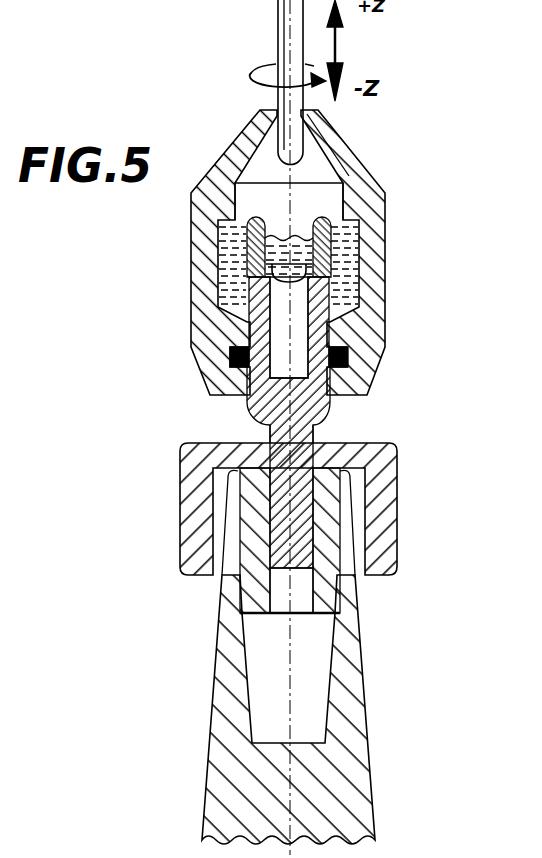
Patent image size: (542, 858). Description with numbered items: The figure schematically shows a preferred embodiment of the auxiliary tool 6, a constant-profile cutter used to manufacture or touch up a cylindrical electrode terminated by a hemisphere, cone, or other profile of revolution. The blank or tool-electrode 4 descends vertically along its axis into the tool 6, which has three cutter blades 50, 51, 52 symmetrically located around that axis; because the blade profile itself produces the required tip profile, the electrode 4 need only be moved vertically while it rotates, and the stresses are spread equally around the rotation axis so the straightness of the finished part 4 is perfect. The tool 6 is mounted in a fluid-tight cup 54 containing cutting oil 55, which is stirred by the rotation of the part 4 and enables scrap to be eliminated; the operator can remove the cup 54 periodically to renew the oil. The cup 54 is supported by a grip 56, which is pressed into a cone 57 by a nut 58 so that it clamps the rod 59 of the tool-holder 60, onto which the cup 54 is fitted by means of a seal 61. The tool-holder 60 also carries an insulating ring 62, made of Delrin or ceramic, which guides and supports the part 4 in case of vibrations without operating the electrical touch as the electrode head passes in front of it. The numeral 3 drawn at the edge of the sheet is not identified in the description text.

The tool changer 3 is at (0, 853).
The tool-electrode 4 is at (286, 33).
The auxiliary tool 6 is at (280, 300).
The cutter blade 50 is at (340, 262).
The cutter blade 51 is at (352, 281).
The cutter blade 52 is at (275, 268).
The fluid-tight cup 54 is at (373, 232).
The oil 55 is at (247, 219).
The grip 56 is at (242, 590).
The cone 57 is at (303, 672).
The nut 58 is at (190, 497).
The rod 59 is at (283, 437).
The tool-holder 60 is at (328, 424).
The seal 61 is at (350, 356).
The insulating ring 62 is at (333, 212).